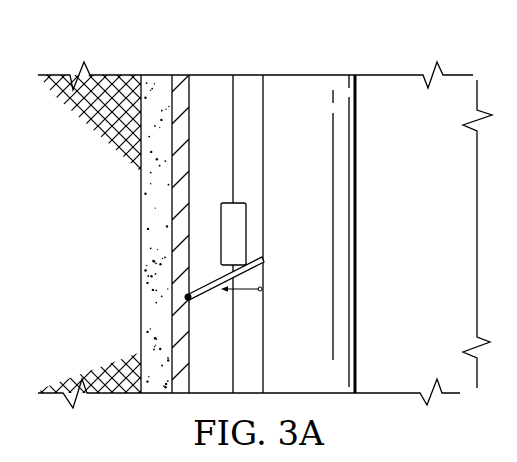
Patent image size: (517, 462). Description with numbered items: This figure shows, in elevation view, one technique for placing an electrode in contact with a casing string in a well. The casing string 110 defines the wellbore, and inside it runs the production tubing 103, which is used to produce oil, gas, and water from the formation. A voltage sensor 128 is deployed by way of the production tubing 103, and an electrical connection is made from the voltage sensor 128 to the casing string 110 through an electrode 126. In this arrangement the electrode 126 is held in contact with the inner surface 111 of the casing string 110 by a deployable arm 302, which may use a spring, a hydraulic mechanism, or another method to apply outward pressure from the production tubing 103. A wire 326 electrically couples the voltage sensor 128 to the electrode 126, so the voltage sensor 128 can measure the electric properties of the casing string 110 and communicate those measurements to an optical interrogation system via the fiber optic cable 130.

The production tubing 103 is at (350, 235).
The casing string 110 is at (187, 334).
The inner surface of casing string 111 is at (189, 102).
The fiber optic cable 130 is at (233, 101).
The voltage sensor 128 is at (247, 218).
The deployable arm 302 is at (213, 293).
The electrode 126 is at (173, 308).
The wire 326 is at (193, 287).